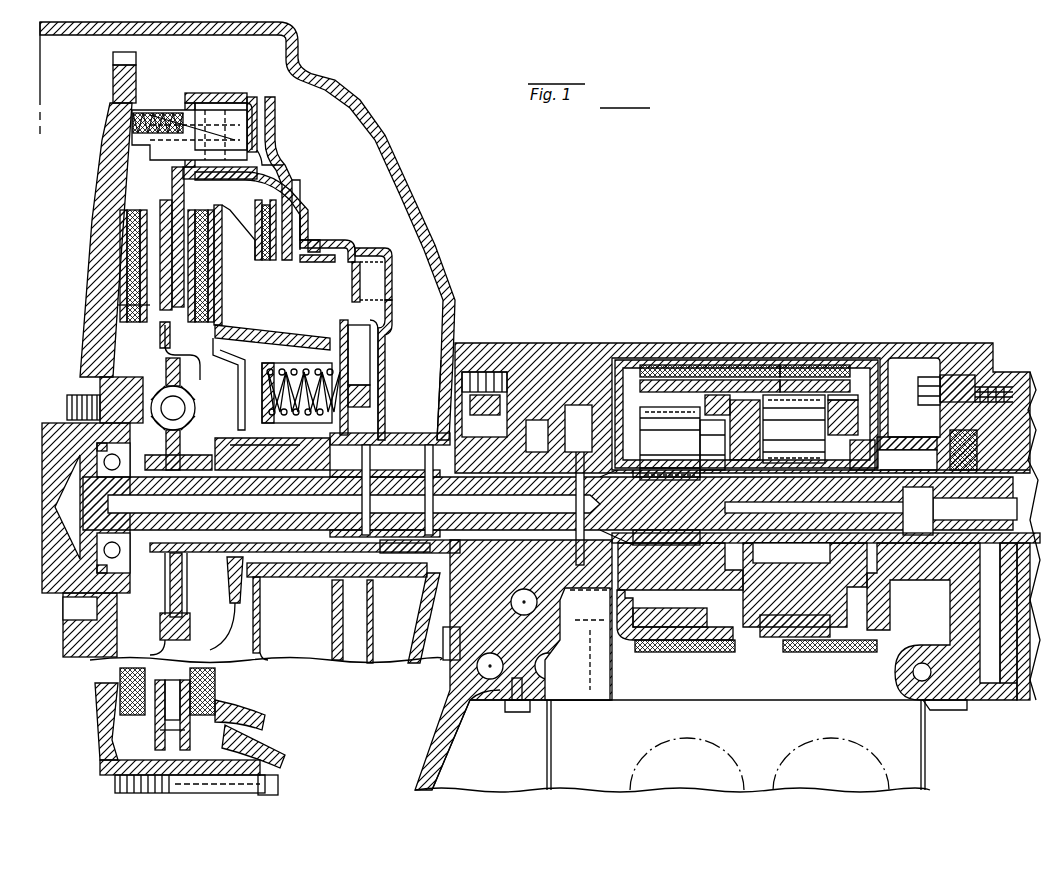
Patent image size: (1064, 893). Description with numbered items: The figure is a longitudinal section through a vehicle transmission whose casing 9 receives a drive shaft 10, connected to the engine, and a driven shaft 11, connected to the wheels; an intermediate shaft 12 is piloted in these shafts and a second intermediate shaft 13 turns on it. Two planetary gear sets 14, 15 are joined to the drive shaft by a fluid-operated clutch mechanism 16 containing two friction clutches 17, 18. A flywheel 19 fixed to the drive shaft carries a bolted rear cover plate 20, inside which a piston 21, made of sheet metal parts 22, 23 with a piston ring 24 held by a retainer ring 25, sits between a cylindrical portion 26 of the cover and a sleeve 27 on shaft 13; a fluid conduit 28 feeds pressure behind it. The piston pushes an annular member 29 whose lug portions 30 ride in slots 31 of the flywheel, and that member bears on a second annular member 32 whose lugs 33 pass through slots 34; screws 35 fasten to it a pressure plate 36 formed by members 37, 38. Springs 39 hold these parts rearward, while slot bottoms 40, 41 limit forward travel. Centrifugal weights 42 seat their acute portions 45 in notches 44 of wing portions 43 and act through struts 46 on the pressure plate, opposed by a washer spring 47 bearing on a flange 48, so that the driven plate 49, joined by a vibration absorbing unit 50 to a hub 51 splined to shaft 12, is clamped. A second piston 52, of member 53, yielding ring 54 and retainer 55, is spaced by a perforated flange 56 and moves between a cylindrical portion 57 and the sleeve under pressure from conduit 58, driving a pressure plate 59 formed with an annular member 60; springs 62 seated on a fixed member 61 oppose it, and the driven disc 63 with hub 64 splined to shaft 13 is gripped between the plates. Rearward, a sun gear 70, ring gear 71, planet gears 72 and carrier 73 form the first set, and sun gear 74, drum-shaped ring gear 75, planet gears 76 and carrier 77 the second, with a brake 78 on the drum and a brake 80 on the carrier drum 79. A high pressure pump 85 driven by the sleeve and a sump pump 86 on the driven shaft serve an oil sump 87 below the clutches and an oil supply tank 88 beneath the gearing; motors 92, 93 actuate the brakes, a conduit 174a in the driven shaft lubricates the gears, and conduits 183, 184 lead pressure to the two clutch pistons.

The transmission casing 9 is at (428, 210).
The drive shaft 10 is at (48, 425).
The driven shaft 11 is at (1034, 465).
The intermediate shaft 12 is at (292, 488).
The second intermediate shaft 13 is at (392, 438).
The planetary gear set 14 is at (624, 344).
The planetary gear set 15 is at (758, 352).
The clutch mechanism 16 is at (350, 72).
The friction clutch 17 is at (111, 243).
The friction clutch 18 is at (179, 273).
The flywheel 19 is at (106, 152).
The rear cover plate 20 is at (394, 293).
The piston 21 is at (396, 330).
The annular sheet metal part 22 is at (382, 342).
The annular sheet metal part 23 is at (352, 366).
The piston ring 24 is at (386, 252).
The retainer ring 25 is at (388, 268).
The cylindrical portion 26 is at (355, 242).
The sleeve 27 is at (382, 455).
The fluid conduit 28 is at (430, 460).
The annular sheet metal member 29 is at (304, 205).
The lug portions 30 is at (226, 108).
The slot 31 is at (252, 108).
The annular sheet metal member 32 is at (292, 190).
The lug portions 33 is at (268, 758).
The slots 34 is at (278, 784).
The screws 35 is at (102, 745).
The pressure plate 36 is at (145, 299).
The sheet metal member 37 is at (163, 328).
The sheet metal member 38 is at (180, 232).
The springs 39 is at (152, 112).
The bottom 40 is at (222, 88).
The bottom 41 is at (170, 746).
The centrifugal weights 42 is at (172, 128).
The wing portions 43 is at (284, 118).
The notch 44 is at (298, 150).
The acute portion 45 is at (300, 162).
The strut 46 is at (182, 186).
The washer type spring 47 is at (266, 262).
The flange 48 is at (272, 262).
The driven plate 49 is at (122, 305).
The vibration absorbing unit 50 is at (190, 412).
The hub 51 is at (200, 455).
The piston 52 is at (305, 301).
The member 53 is at (358, 388).
The piston ring 54 is at (320, 250).
The retainer member 55 is at (370, 288).
The perforated flange 56 is at (372, 398).
The cylindrical portion 57 is at (305, 232).
The fluid conduit 58 is at (356, 492).
The pressure plate 59 is at (234, 244).
The annular member 60 is at (218, 282).
The annular member 61 is at (270, 368).
The springs 62 is at (316, 358).
The driven clutch disc 63 is at (206, 262).
The hub 64 is at (240, 380).
The sun gear 70 is at (692, 480).
The ring gear 71 is at (680, 385).
The planet gears 72 is at (668, 480).
The planet gear carrier 73 is at (733, 400).
The sun gear 74 is at (858, 440).
The ring gear 75 is at (826, 362).
The planet gears 76 is at (793, 392).
The planet gear carrier 77 is at (862, 400).
The brake 78 is at (858, 362).
The brake drum 79 is at (650, 368).
The brake 80 is at (712, 392).
The high pressure pump 85 is at (487, 350).
The sump pump 86 is at (953, 432).
The oil sump 87 is at (440, 760).
The oil supply tank 88 is at (915, 746).
The motor 92 is at (671, 733).
The motor 93 is at (817, 733).
The conduit 174a is at (960, 511).
The conduit 183 is at (537, 392).
The conduit 184 is at (580, 400).